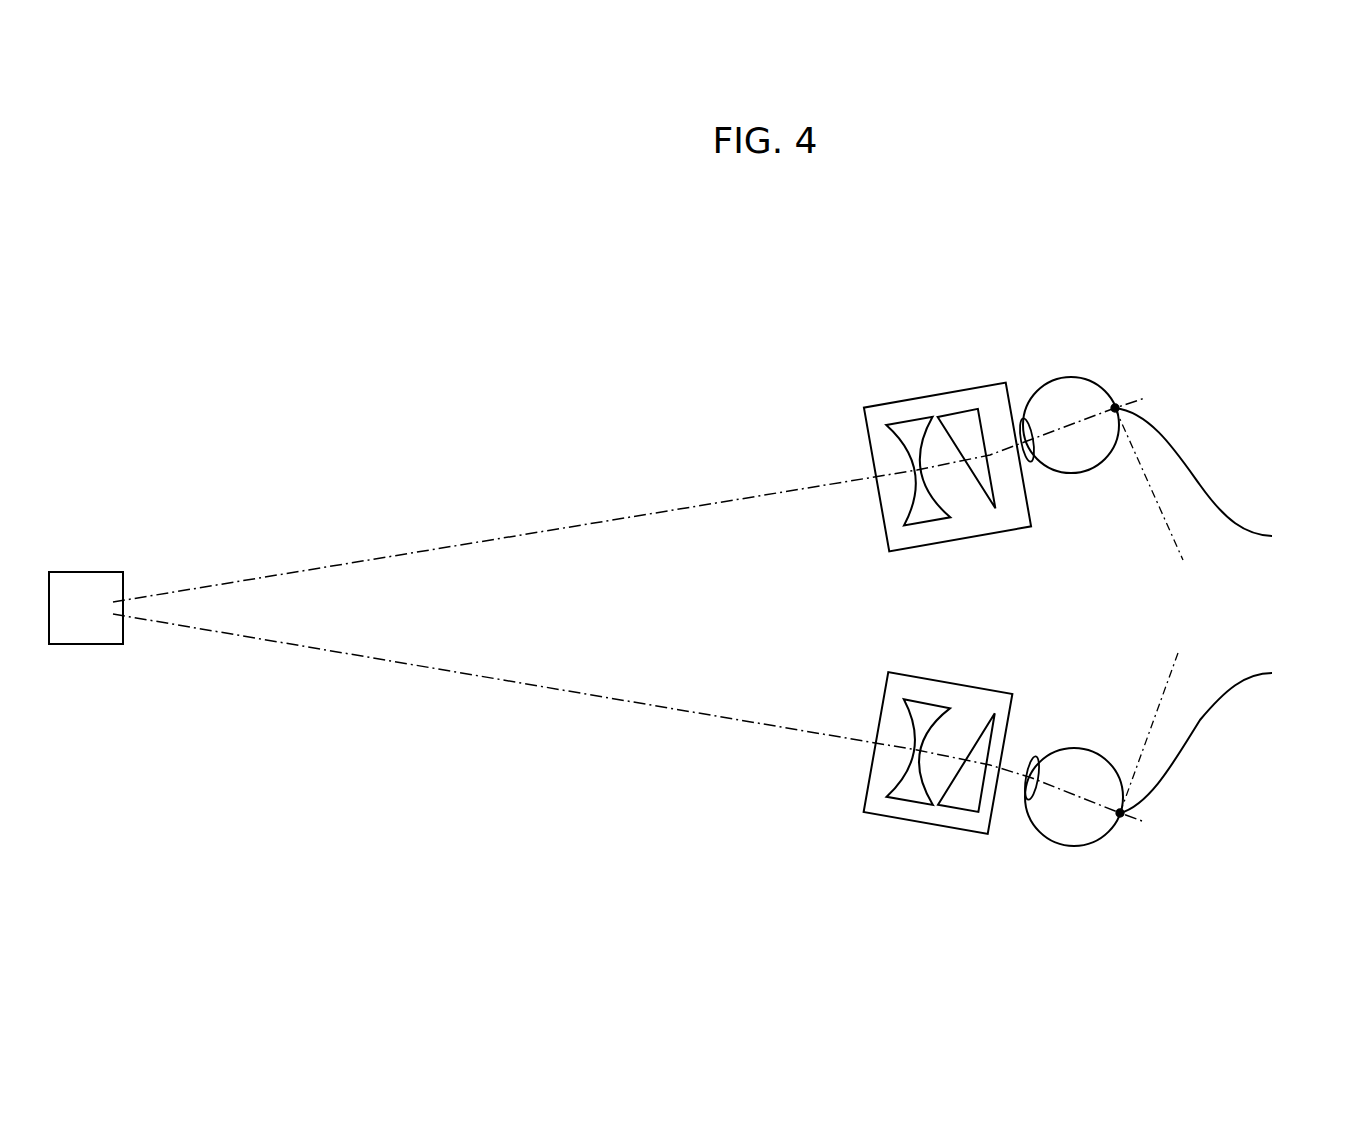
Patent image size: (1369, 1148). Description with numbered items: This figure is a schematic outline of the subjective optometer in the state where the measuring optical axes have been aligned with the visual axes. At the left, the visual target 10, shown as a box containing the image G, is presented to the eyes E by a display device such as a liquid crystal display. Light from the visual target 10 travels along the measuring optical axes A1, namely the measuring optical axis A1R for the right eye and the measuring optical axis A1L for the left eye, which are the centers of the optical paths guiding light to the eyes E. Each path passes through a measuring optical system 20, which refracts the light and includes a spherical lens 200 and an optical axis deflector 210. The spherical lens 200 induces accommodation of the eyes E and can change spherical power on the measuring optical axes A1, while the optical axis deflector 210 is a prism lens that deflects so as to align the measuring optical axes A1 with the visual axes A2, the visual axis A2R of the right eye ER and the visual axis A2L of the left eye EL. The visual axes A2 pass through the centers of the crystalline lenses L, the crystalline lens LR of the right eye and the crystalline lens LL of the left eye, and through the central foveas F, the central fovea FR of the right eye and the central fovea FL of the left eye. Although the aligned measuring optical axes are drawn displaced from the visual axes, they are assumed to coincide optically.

The visual target 10 is at (86, 643).
The image G is at (86, 608).
The measuring optical system 20 is at (932, 608).
The spherical lens 200 is at (920, 527).
The optical axis deflector 210 is at (961, 412).
The crystalline lenses L is at (932, 611).
The crystalline lens of the right eye LR is at (1024, 485).
The crystalline lens of the left eye LL is at (1023, 745).
The eyes E is at (1077, 611).
The right eye ER is at (1077, 475).
The left eye EL is at (1077, 748).
The measuring optical axes A1 is at (629, 618).
The measuring optical axis for a right eye A1R is at (567, 533).
The measuring optical axis for a left eye A1L is at (570, 686).
The visual axes A2 is at (1162, 610).
The visual axis of the right eye A2R is at (1163, 504).
The visual axis of the left eye A2L is at (1164, 723).
The central foveas F is at (1227, 610).
The central fovea of the right eye FR is at (1205, 477).
The central fovea of the left eye FL is at (1207, 739).